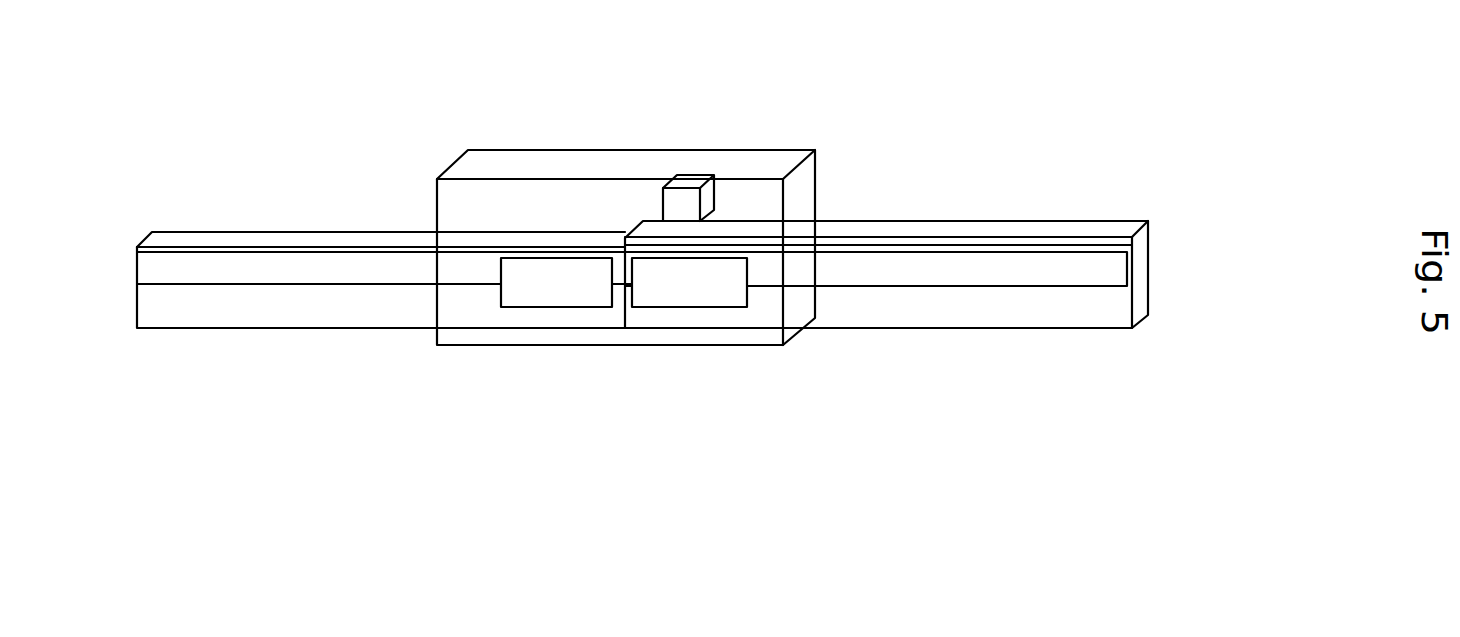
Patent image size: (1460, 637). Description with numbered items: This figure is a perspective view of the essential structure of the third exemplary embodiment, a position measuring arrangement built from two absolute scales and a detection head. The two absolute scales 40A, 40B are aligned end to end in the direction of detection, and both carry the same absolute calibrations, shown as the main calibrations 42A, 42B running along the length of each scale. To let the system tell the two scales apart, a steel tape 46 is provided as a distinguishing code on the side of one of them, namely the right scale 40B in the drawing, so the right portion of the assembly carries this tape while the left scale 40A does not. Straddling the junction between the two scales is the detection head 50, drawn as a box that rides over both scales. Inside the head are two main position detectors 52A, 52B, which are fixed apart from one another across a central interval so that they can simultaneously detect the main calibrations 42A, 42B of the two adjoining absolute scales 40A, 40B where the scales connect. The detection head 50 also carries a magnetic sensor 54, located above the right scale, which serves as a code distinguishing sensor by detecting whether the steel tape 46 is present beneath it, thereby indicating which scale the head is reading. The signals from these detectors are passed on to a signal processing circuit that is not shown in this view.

The absolute scale 40A is at (152, 328).
The absolute scale 40B is at (1078, 326).
The main calibrations 42A is at (155, 268).
The main calibrations 42B is at (1067, 272).
The steel tape 46 is at (940, 228).
The detection head 50 is at (518, 160).
The main position detector 52A is at (548, 292).
The main position detector 52B is at (727, 292).
The magnetic sensor 54 is at (690, 200).